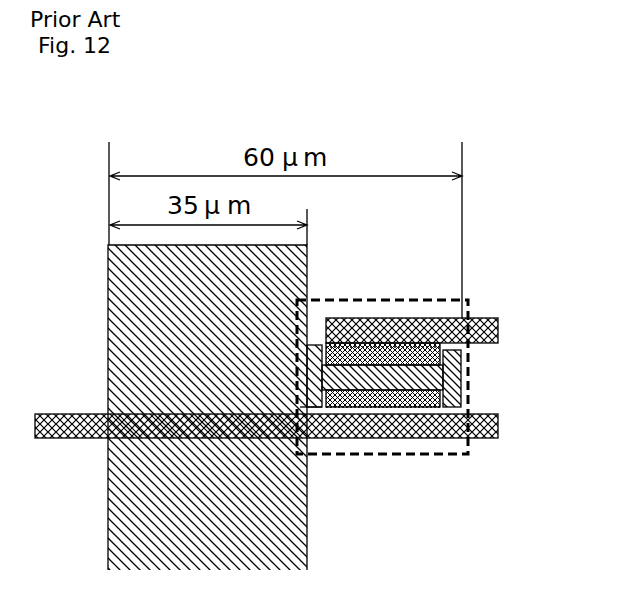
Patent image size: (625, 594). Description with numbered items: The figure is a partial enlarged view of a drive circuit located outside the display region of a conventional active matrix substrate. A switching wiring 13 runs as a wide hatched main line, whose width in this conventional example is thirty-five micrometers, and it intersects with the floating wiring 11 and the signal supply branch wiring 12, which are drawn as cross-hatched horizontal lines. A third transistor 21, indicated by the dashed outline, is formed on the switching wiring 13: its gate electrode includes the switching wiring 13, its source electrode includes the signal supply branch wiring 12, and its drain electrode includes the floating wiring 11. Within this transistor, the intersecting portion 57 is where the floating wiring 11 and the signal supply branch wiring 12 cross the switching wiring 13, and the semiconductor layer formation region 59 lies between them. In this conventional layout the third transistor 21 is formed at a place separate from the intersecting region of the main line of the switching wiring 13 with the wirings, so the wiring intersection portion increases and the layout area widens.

The floating wiring 11 is at (498, 328).
The signal supply branch wiring 12 is at (498, 428).
The switching wiring 13 is at (307, 272).
The third transistor 21 is at (450, 457).
The intersecting portion between floating wiring and signal supply branch wiring, an 57 is at (420, 367).
The semiconductor layer formation region 59 is at (445, 378).